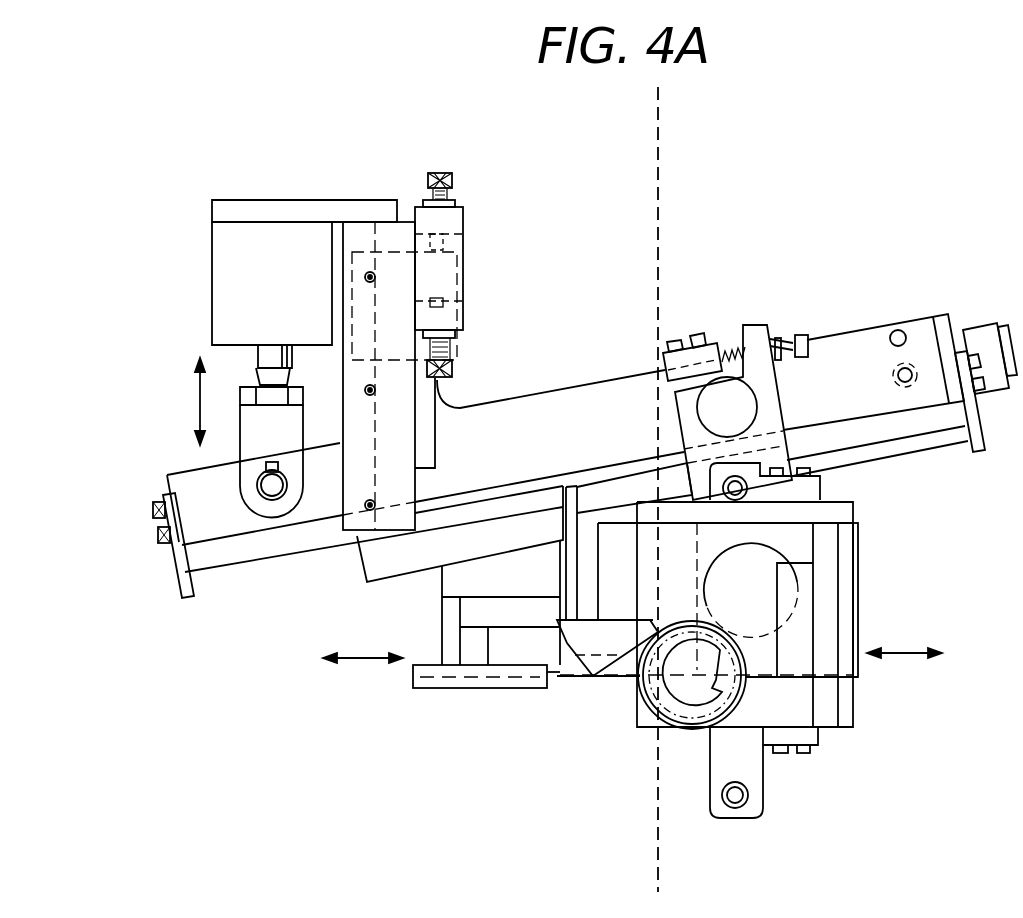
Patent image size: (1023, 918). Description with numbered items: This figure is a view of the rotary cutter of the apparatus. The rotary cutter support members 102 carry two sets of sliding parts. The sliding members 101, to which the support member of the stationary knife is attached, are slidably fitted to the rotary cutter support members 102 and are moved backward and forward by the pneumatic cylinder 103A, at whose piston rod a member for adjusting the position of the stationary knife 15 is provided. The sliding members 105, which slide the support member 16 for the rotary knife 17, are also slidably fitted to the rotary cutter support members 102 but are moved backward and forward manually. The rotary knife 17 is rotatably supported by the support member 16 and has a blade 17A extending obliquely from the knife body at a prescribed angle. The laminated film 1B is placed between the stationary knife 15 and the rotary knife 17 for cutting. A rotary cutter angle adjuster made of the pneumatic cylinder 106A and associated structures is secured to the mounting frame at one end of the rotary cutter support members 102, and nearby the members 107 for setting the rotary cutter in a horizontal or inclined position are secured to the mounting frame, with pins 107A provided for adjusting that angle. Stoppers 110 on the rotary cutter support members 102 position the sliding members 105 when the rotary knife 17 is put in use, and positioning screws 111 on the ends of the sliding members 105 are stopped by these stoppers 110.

The laminated film 1B is at (663, 180).
The stationary knife 15 is at (595, 665).
The support member 16 is at (650, 703).
The rotary knife 17 is at (687, 693).
The blade 17A is at (716, 695).
The sliding members 101 is at (440, 580).
The rotary cutter support members 102 is at (572, 385).
The pneumatic cylinder 103A is at (973, 332).
The sliding members 105 is at (853, 515).
The pneumatic cylinder 106A is at (222, 272).
The members for setting the angle of the rotary cutter 107 is at (468, 218).
The pins 107A is at (453, 177).
The stoppers 110 is at (713, 342).
The positioning screws 111 is at (797, 336).